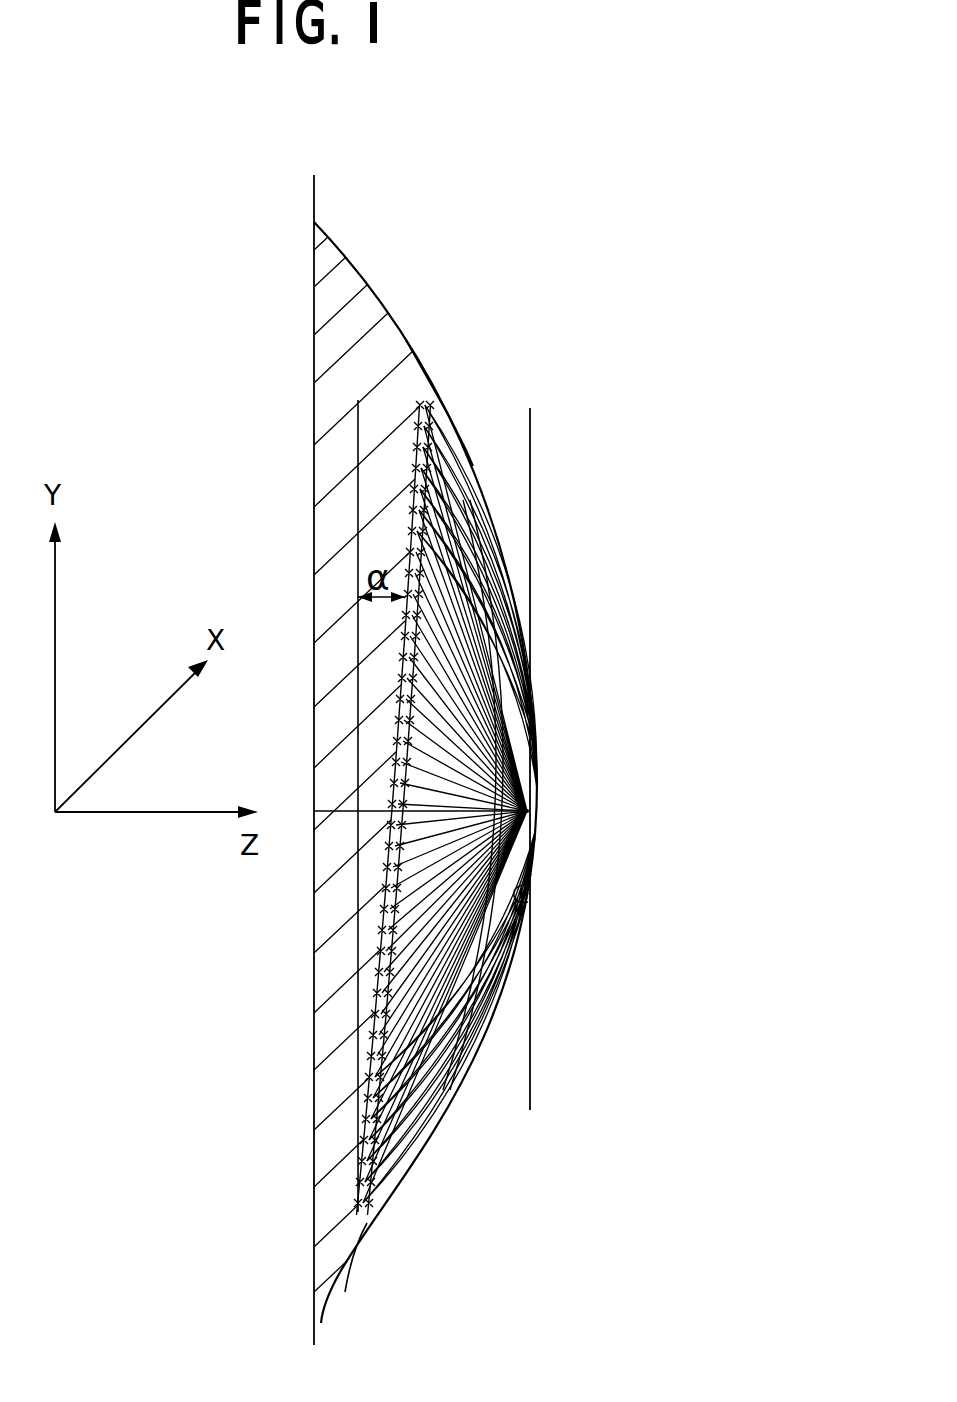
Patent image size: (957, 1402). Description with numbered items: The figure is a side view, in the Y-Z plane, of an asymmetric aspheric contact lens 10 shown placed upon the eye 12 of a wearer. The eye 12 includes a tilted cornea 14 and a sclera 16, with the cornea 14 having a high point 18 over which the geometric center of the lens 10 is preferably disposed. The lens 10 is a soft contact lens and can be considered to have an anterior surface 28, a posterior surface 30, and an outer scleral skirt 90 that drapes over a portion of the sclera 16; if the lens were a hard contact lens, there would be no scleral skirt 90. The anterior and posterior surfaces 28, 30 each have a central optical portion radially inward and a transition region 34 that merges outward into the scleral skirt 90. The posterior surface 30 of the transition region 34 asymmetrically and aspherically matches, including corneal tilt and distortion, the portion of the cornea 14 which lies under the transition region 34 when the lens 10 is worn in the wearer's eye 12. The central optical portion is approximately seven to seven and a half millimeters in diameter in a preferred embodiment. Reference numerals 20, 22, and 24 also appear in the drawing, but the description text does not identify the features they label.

The asymmetric aspheric contact lens 10 is at (509, 549).
The eye 12 is at (302, 300).
The tilted cornea 14 is at (398, 830).
The sclera 16 is at (326, 1218).
The high point of the cornea 18 is at (530, 777).
The aperture plane line 20 is at (532, 1072).
The lens surface 22 is at (403, 668).
The reference plane 24 is at (332, 470).
The anterior surface 28 is at (528, 668).
The posterior surface 30 is at (530, 893).
The transition region 34 is at (450, 423).
The scleral skirt 90 is at (418, 358).